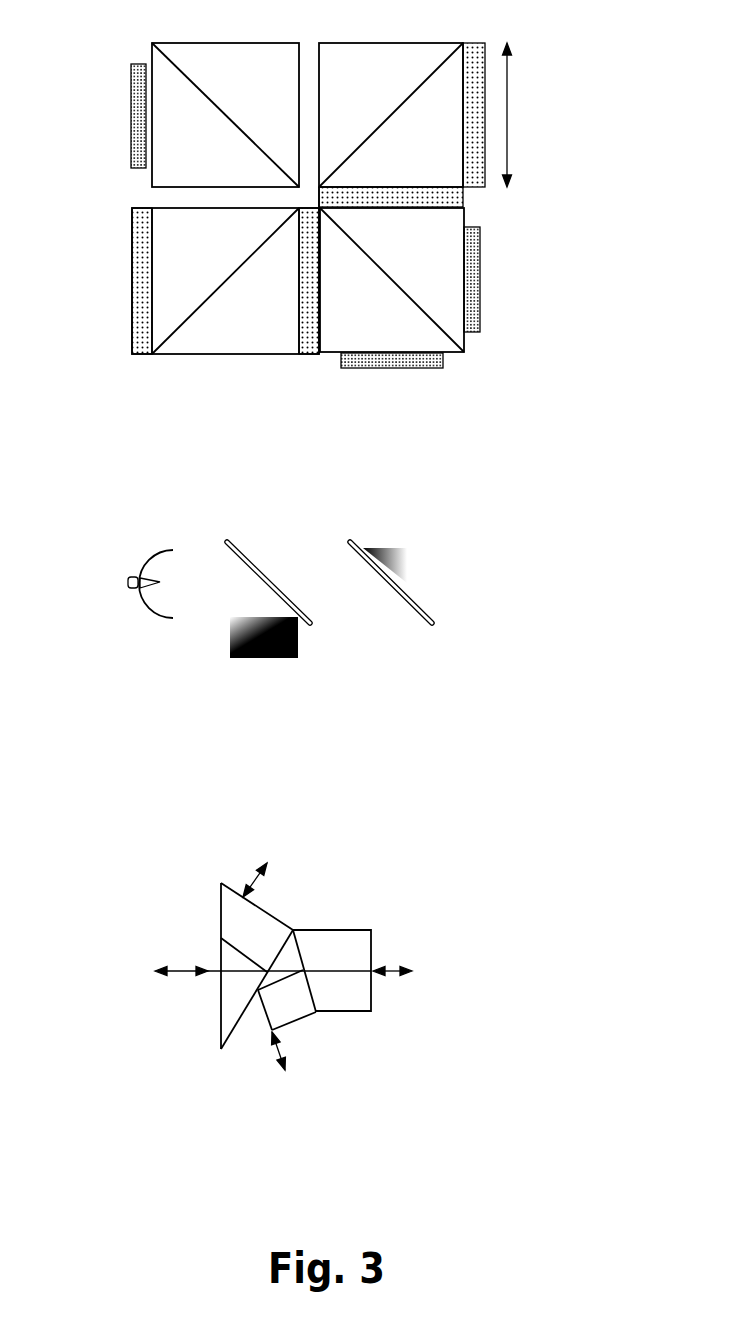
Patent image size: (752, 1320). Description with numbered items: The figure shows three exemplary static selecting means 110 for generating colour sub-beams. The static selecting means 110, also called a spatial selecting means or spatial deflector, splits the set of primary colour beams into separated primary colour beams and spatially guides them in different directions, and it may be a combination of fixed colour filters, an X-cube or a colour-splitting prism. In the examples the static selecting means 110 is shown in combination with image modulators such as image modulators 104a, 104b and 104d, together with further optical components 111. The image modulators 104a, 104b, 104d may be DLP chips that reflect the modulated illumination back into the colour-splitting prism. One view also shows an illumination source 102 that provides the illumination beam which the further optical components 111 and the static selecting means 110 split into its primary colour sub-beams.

The static selecting means 110 is at (332, 546).
The further optical components 111 is at (443, 195).
The image modulator 104a is at (402, 372).
The image modulator 104b is at (464, 270).
The light valve (fourth panel) 104d is at (130, 82).
The illumination source 102 is at (140, 593).